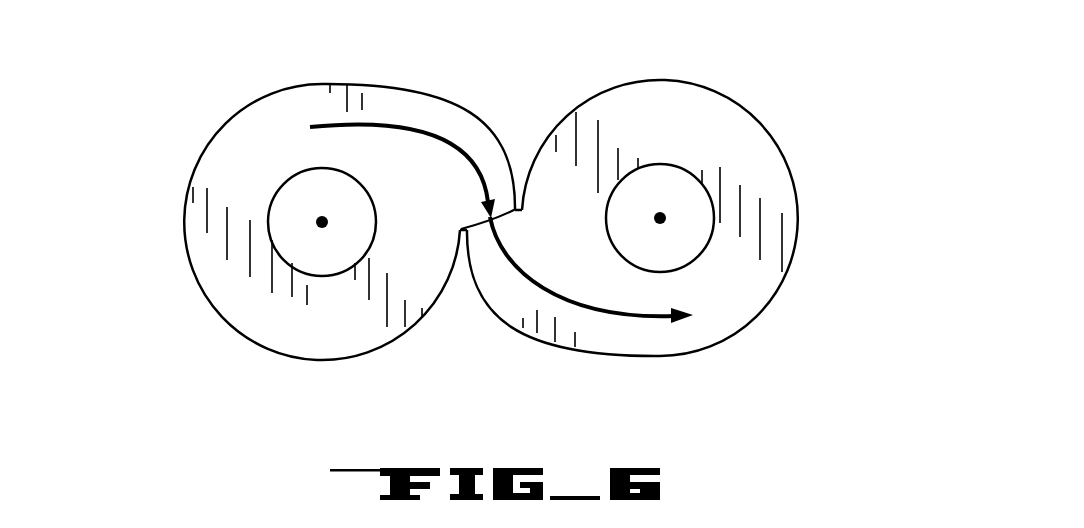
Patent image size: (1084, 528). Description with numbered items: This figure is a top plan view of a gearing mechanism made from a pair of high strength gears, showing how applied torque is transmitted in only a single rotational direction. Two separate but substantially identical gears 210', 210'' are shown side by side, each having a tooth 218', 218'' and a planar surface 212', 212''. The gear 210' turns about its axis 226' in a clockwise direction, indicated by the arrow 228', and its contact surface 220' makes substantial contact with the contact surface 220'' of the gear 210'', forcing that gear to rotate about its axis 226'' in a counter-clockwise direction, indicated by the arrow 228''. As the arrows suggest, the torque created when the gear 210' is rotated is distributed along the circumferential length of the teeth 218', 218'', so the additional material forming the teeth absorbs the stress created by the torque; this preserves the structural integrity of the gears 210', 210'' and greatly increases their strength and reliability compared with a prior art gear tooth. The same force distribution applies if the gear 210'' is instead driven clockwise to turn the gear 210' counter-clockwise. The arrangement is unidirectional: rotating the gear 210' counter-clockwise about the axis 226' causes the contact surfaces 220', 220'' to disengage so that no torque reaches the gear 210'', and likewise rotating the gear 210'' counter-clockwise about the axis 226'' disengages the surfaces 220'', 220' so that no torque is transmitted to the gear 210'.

The gear 210' is at (314, 248).
The gear 210'' is at (691, 255).
The planar surface 212' is at (322, 268).
The planar surface 212'' is at (701, 218).
The tooth 218' is at (439, 146).
The tooth 218'' is at (556, 305).
The contact surface 220' is at (449, 212).
The contact surface 220'' is at (526, 243).
The axis 226' is at (304, 202).
The axis 226'' is at (668, 194).
The arrow 228' is at (402, 131).
The arrow 228'' is at (591, 323).